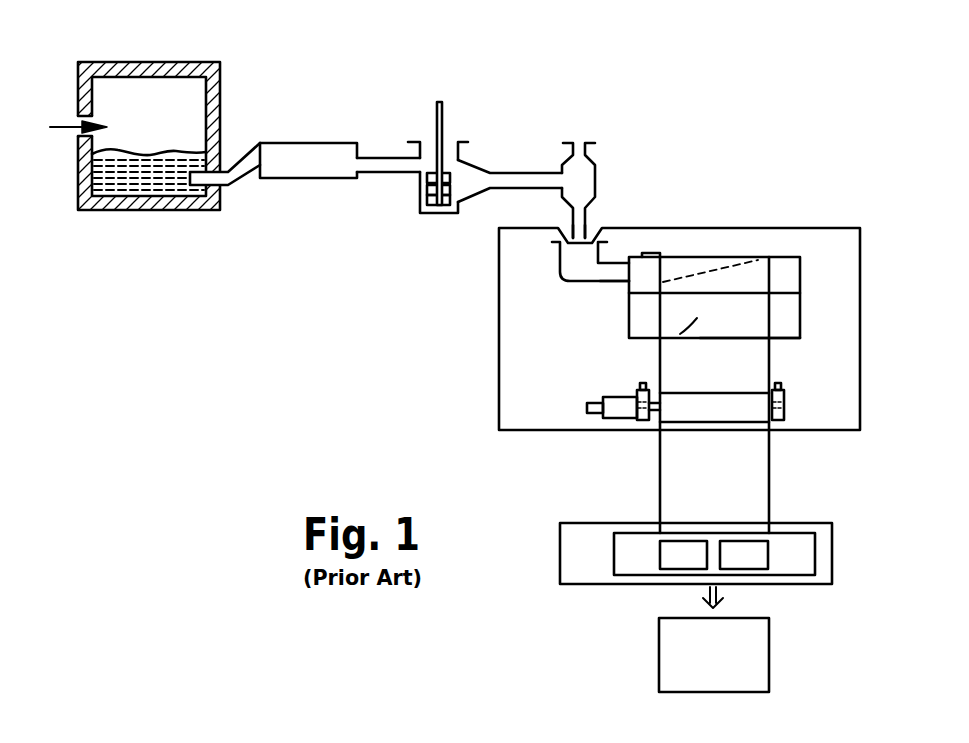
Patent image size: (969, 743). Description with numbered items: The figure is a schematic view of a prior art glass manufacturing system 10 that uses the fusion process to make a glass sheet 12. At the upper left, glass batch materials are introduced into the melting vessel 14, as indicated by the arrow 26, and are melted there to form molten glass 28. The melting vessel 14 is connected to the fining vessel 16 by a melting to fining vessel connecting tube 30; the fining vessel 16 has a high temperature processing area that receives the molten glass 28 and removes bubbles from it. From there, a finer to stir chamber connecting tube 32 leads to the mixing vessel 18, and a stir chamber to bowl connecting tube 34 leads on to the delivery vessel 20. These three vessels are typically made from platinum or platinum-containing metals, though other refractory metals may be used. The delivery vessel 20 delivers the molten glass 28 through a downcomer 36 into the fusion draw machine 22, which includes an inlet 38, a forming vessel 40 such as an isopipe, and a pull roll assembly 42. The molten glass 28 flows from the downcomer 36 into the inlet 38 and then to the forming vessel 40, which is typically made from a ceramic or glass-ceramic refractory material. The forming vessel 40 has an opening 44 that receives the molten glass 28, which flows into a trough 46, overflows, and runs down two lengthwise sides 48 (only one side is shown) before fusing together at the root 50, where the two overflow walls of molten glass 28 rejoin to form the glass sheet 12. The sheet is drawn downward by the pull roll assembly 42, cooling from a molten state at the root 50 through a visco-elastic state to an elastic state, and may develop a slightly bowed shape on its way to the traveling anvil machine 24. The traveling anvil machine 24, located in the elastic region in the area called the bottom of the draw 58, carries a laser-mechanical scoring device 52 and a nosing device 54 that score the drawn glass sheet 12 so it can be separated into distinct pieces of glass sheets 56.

The glass manufacturing system 10 is at (660, 82).
The glass sheet 12 is at (660, 370).
The melting vessel 14 is at (126, 62).
The fining vessel 16 is at (298, 142).
The mixing vessel 18 is at (468, 154).
The delivery vessel 20 is at (597, 170).
The fusion draw machine 22 is at (499, 322).
The traveling anvil machine 24 is at (614, 557).
The arrow 26 is at (62, 128).
The molten glass 28 is at (168, 152).
The melting to fining vessel connecting tube 30 is at (236, 150).
The finer to stir chamber connecting tube 32 is at (387, 173).
The stir chamber to bowl connecting tube 34 is at (540, 188).
The downcomer 36 is at (588, 216).
The inlet 38 is at (559, 280).
The forming vessel 40 is at (800, 275).
The pull roll assembly 42 is at (785, 404).
The opening 44 is at (629, 282).
The trough 46 is at (697, 268).
The lengthwise sides 48 is at (680, 334).
The root 50 is at (735, 338).
The laser-mechanical scoring device 52 is at (687, 555).
The nosing device 54 is at (740, 556).
The glass sheets 56 is at (659, 668).
The bottom of the draw 58 is at (622, 523).